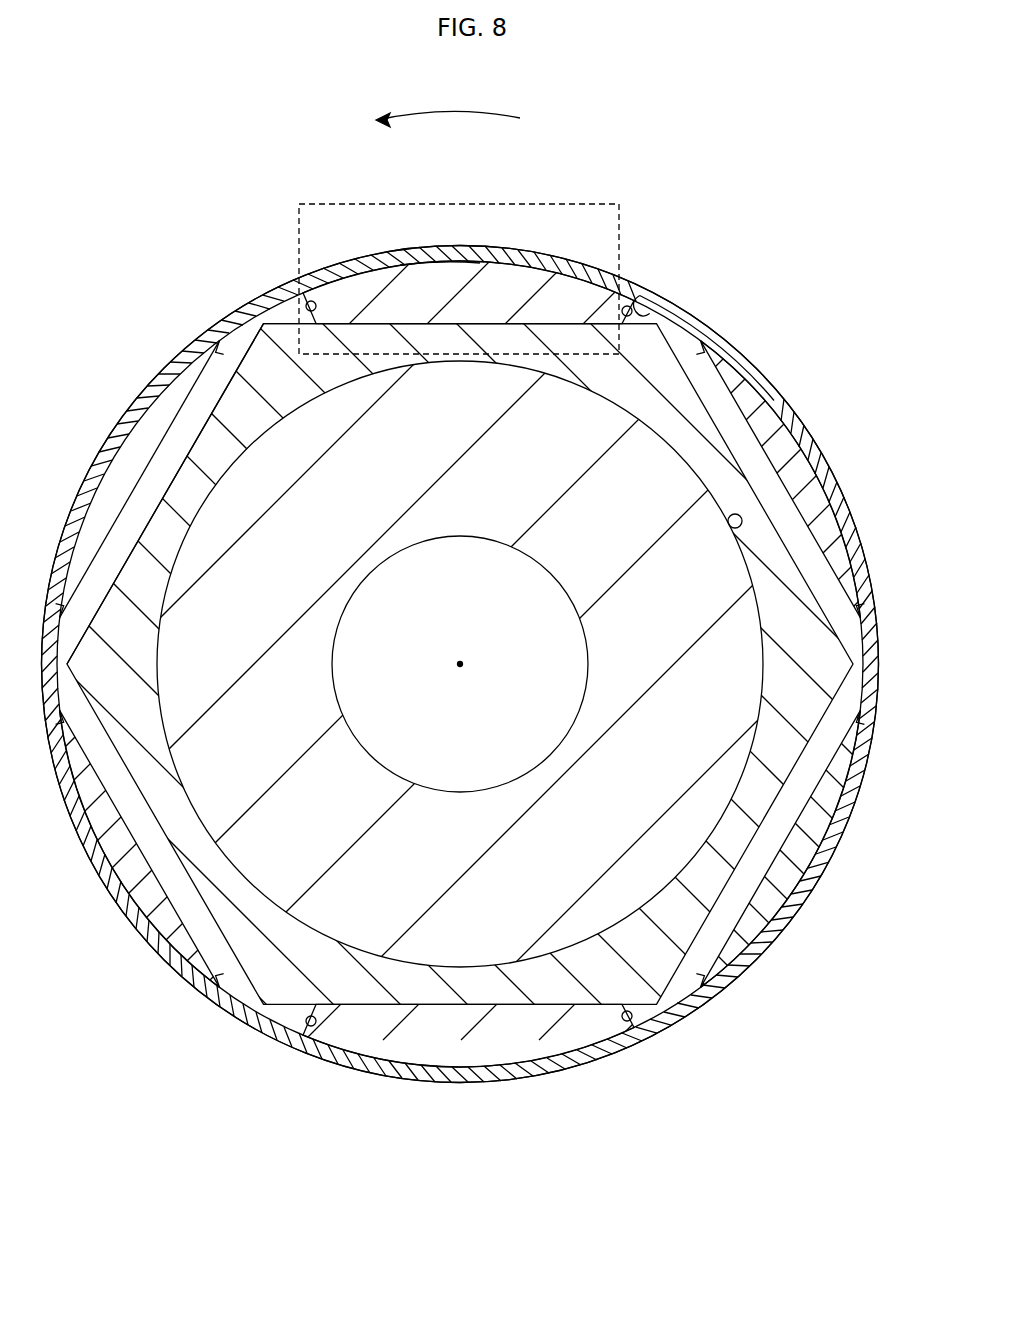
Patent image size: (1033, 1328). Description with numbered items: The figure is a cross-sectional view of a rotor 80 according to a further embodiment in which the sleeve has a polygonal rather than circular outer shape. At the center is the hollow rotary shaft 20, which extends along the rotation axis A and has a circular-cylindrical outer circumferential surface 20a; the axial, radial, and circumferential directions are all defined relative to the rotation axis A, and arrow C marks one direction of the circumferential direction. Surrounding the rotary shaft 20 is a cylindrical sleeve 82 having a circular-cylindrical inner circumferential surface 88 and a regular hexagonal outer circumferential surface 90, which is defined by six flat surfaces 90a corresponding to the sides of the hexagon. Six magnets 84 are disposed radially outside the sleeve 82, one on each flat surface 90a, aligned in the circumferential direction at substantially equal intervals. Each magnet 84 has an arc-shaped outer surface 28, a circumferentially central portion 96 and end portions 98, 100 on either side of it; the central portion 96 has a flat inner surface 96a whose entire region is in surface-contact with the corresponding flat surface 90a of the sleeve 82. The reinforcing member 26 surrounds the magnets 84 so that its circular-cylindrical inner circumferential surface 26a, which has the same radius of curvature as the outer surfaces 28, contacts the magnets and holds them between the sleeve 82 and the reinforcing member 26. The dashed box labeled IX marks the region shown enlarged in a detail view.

The rotor 80 is at (798, 172).
The magnet 84 is at (510, 258).
The outer surface 28 is at (440, 250).
The reinforcing member 26 is at (690, 302).
The inner circumferential surface 26a is at (641, 302).
The rotary shaft 20 is at (717, 704).
The sleeve 82 is at (658, 420).
The outer circumferential surface 20a is at (735, 528).
The inner circumferential surface 88 is at (198, 507).
The rotation axis A is at (463, 667).
The outer circumferential surface 90 is at (685, 342).
The flat surface 90a is at (218, 348).
The central portion 96 is at (502, 304).
The inner surface 96a is at (440, 326).
The end portion 98 is at (348, 298).
The end portion 100 is at (565, 295).
The detail region IX is at (299, 204).
The arrow C is at (448, 107).